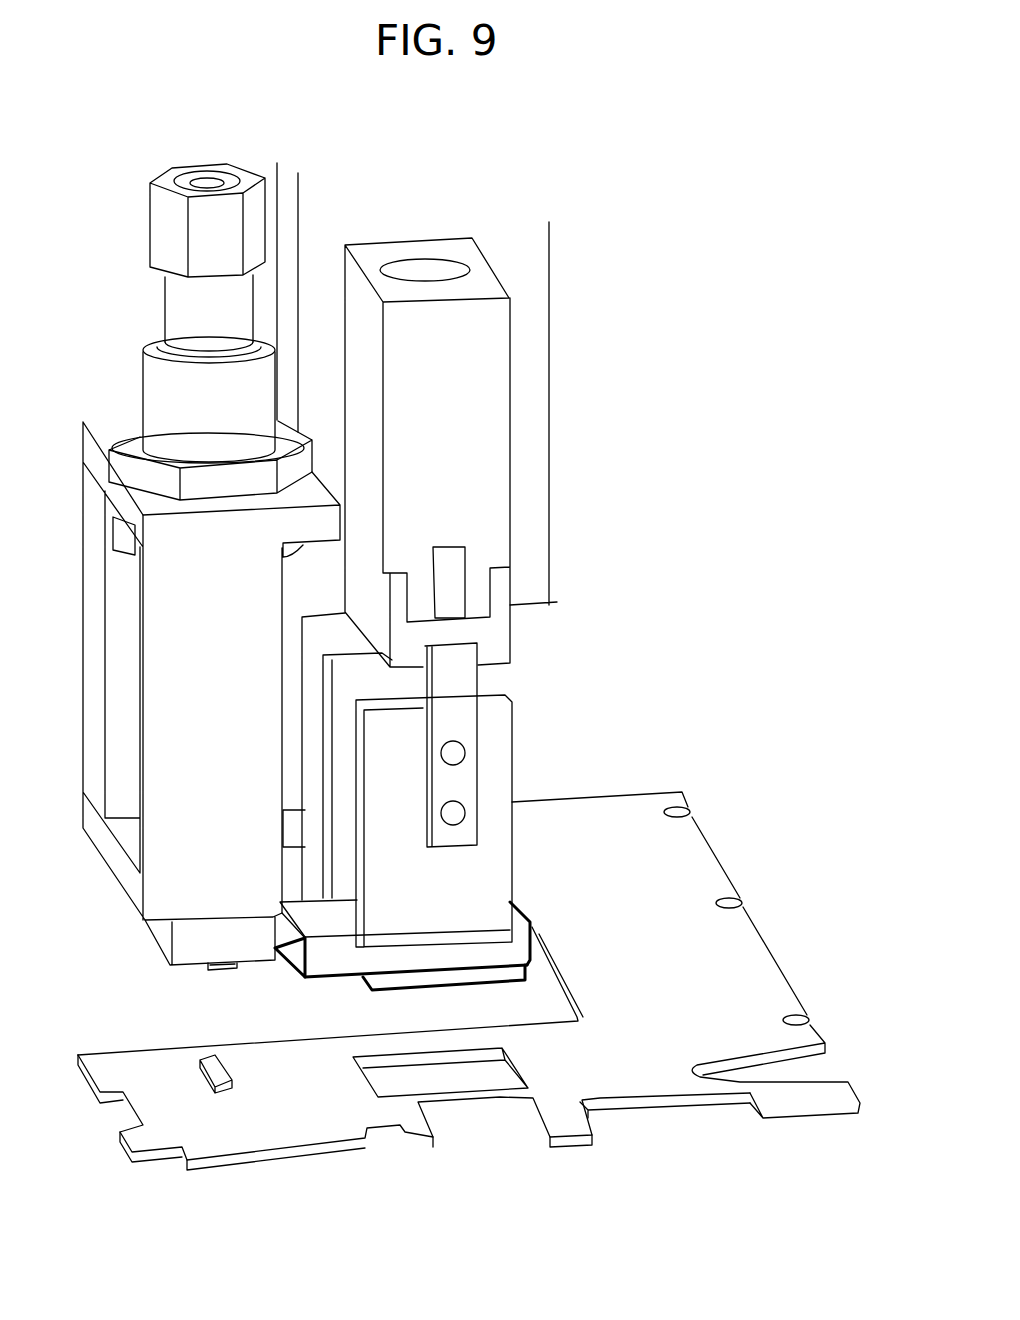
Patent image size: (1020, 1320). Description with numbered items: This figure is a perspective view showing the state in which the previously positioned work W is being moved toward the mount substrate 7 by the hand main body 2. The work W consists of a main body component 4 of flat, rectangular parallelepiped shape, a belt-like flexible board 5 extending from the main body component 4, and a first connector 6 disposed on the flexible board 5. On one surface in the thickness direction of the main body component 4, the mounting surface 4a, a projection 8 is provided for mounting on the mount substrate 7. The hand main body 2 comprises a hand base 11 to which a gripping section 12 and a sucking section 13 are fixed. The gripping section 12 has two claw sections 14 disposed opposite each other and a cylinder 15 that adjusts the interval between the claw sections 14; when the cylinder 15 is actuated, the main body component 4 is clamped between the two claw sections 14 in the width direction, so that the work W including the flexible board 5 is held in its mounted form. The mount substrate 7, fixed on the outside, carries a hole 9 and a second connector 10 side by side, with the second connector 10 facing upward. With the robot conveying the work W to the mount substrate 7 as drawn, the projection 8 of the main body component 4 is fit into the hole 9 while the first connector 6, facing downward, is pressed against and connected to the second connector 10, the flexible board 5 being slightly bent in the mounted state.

The hand main body 2 is at (628, 215).
The main body component 4 is at (512, 957).
The mounting surface 4a is at (362, 978).
The flexible board 5 is at (283, 930).
The first connector 6 is at (217, 973).
The mount substrate 7 is at (626, 833).
The projection 8 is at (447, 992).
The hole 9 is at (510, 1080).
The second connector 10 is at (221, 1085).
The hand base 11 is at (533, 330).
The gripping section 12 is at (527, 657).
The sucking section 13 is at (151, 943).
The claw sections 14 is at (352, 677).
The cylinder 15 is at (483, 460).
The work W is at (303, 985).